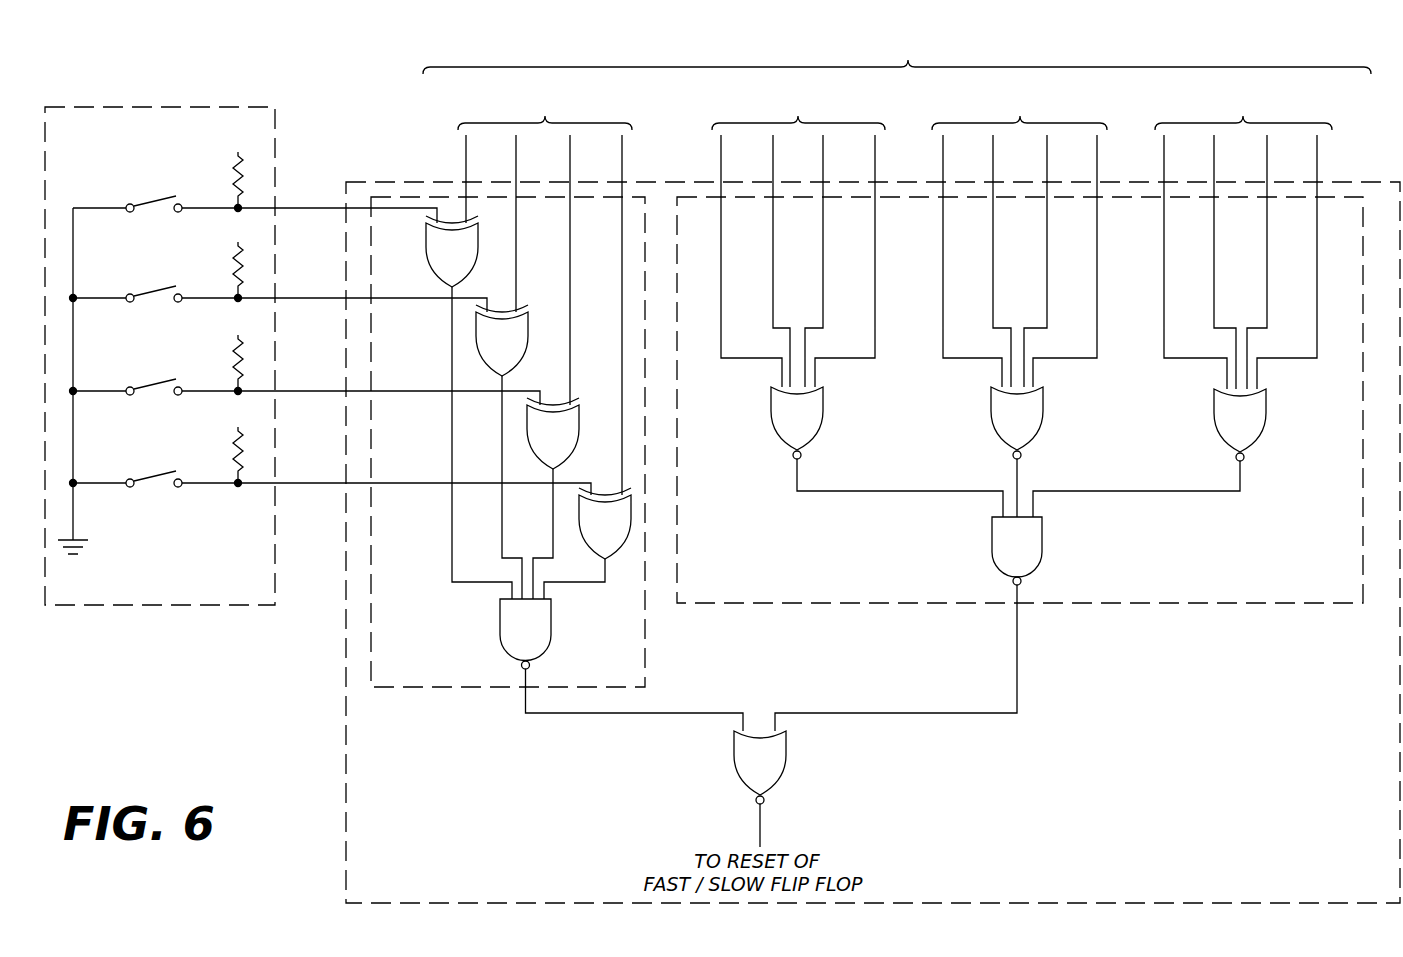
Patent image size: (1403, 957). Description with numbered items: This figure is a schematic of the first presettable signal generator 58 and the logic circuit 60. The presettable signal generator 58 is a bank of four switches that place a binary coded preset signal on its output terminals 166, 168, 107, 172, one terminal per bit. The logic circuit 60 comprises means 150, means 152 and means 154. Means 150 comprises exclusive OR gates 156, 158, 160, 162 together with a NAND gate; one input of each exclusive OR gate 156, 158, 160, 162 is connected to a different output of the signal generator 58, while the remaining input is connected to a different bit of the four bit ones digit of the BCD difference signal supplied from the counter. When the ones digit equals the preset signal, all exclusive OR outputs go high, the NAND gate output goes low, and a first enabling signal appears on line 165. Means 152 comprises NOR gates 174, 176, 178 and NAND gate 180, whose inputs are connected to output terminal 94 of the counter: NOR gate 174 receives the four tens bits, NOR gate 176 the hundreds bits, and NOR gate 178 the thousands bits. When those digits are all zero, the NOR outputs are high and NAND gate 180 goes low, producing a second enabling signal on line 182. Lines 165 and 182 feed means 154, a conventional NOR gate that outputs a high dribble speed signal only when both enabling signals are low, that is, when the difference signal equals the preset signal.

The first presettable signal generator 58 is at (160, 605).
The logic circuit 60 is at (1400, 730).
The output terminal of counter 94 is at (897, 51).
The 2^1 switch output line 107 is at (315, 391).
The means for comparing preset signal 150 is at (539, 389).
The means for detecting zero digits 152 is at (1020, 346).
The NOR gate means 154 is at (778, 770).
The exclusive OR gate 156 is at (443, 263).
The exclusive OR gate 158 is at (496, 351).
The exclusive OR gate 160 is at (535, 435).
The exclusive OR gate 162 is at (613, 562).
The line 165 is at (567, 713).
The output terminal 166 is at (313, 208).
The output terminal 168 is at (313, 298).
The output terminal 172 is at (305, 483).
The NOR gate 174 is at (815, 432).
The NOR gate 176 is at (1035, 432).
The NOR gate 178 is at (1253, 410).
The NAND gate 180 is at (1033, 562).
The line 182 is at (1017, 693).